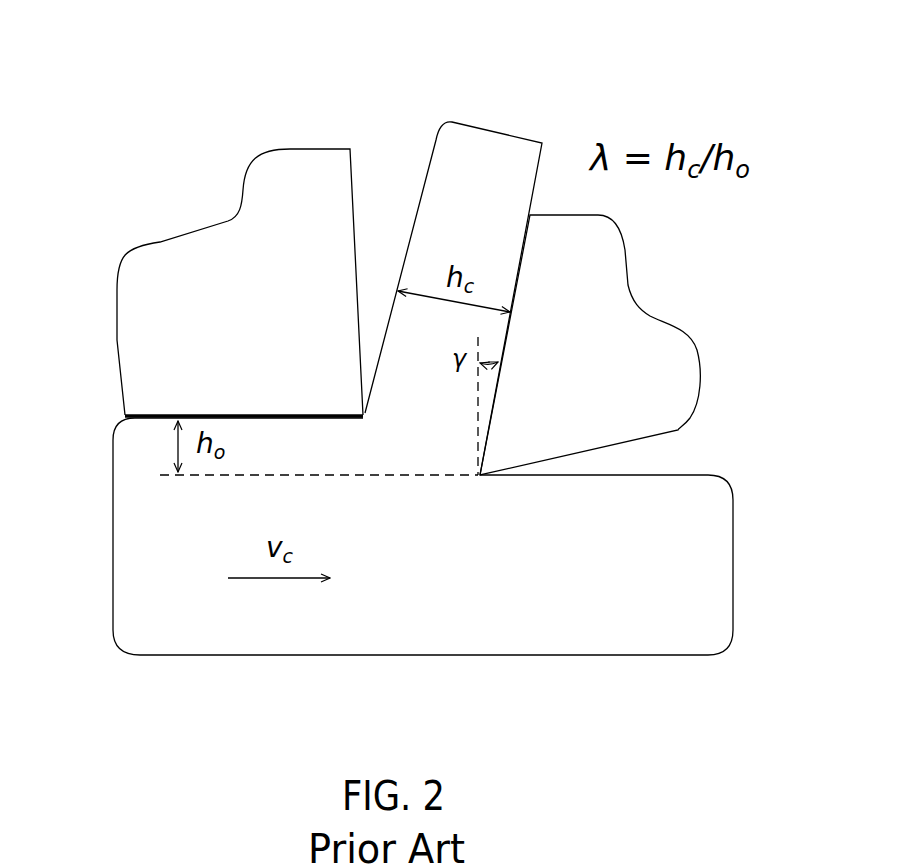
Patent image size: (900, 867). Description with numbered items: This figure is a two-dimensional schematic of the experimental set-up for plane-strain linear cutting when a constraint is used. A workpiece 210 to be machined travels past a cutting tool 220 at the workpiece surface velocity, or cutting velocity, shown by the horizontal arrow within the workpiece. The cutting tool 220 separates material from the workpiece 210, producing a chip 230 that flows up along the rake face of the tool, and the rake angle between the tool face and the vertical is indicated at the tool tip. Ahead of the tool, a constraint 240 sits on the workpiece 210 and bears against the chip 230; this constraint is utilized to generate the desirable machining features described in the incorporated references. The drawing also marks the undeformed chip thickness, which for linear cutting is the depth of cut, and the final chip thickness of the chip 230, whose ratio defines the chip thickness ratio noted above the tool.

The workpiece 210 is at (135, 648).
The cutting tool 220 is at (645, 308).
The chip 230 is at (440, 132).
The constraint 240 is at (232, 188).